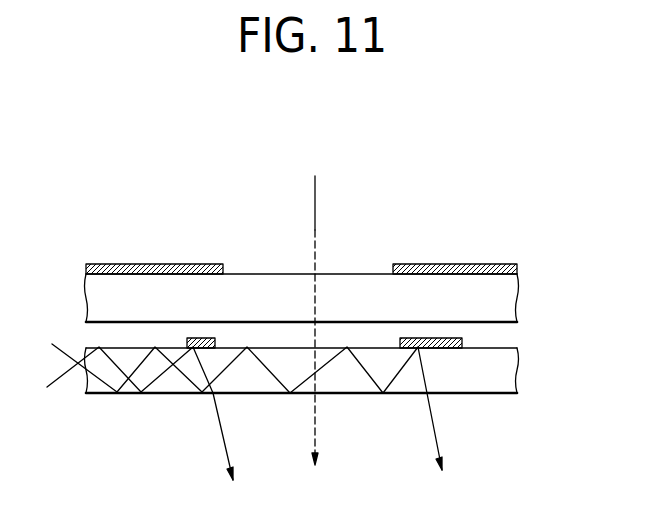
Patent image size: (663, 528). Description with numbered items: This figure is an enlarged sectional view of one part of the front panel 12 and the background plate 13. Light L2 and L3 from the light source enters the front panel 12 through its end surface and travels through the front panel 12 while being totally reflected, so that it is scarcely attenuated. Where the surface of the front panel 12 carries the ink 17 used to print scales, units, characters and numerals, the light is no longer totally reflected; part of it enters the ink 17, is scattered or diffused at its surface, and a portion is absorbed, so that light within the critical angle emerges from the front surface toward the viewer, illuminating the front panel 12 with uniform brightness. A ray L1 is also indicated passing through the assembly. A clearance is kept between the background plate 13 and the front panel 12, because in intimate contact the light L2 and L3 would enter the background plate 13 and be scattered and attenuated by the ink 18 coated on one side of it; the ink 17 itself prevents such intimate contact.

The front panel 12 is at (517, 369).
The background plate 13 is at (518, 294).
The ink 17 is at (215, 342).
The ink 18 is at (173, 264).
The incident light ray passing straight through L1 is at (316, 323).
The light L2 is at (131, 430).
The light L3 is at (237, 412).